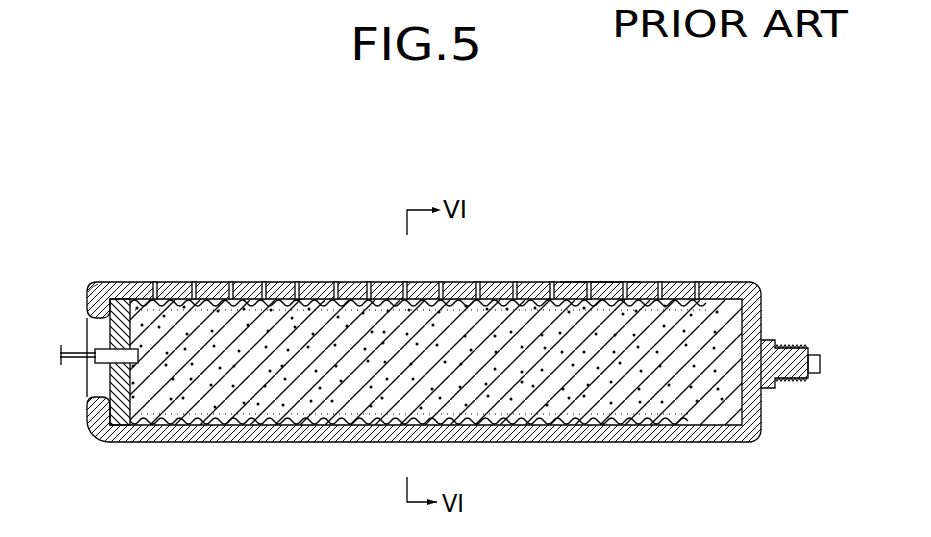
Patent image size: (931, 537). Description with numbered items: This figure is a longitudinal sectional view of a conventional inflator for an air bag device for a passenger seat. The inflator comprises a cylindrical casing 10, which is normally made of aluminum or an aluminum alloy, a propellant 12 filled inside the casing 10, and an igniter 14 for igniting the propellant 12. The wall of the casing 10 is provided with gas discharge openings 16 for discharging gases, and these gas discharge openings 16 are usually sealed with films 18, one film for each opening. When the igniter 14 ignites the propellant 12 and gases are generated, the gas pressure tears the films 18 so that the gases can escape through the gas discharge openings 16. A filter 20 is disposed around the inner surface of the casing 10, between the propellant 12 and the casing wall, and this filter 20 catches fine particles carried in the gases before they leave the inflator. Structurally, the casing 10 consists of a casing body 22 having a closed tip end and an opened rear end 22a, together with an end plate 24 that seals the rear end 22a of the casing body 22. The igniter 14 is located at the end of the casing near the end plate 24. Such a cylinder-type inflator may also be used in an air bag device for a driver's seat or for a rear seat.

The casing 10 is at (247, 274).
The propellant 12 is at (495, 320).
The igniter 14 is at (108, 365).
The gas discharge openings 16 is at (193, 282).
The films 18 is at (608, 295).
The filter 20 is at (157, 291).
The casing body 22 is at (115, 280).
The rear end 22a is at (87, 296).
The end plate 24 is at (108, 335).